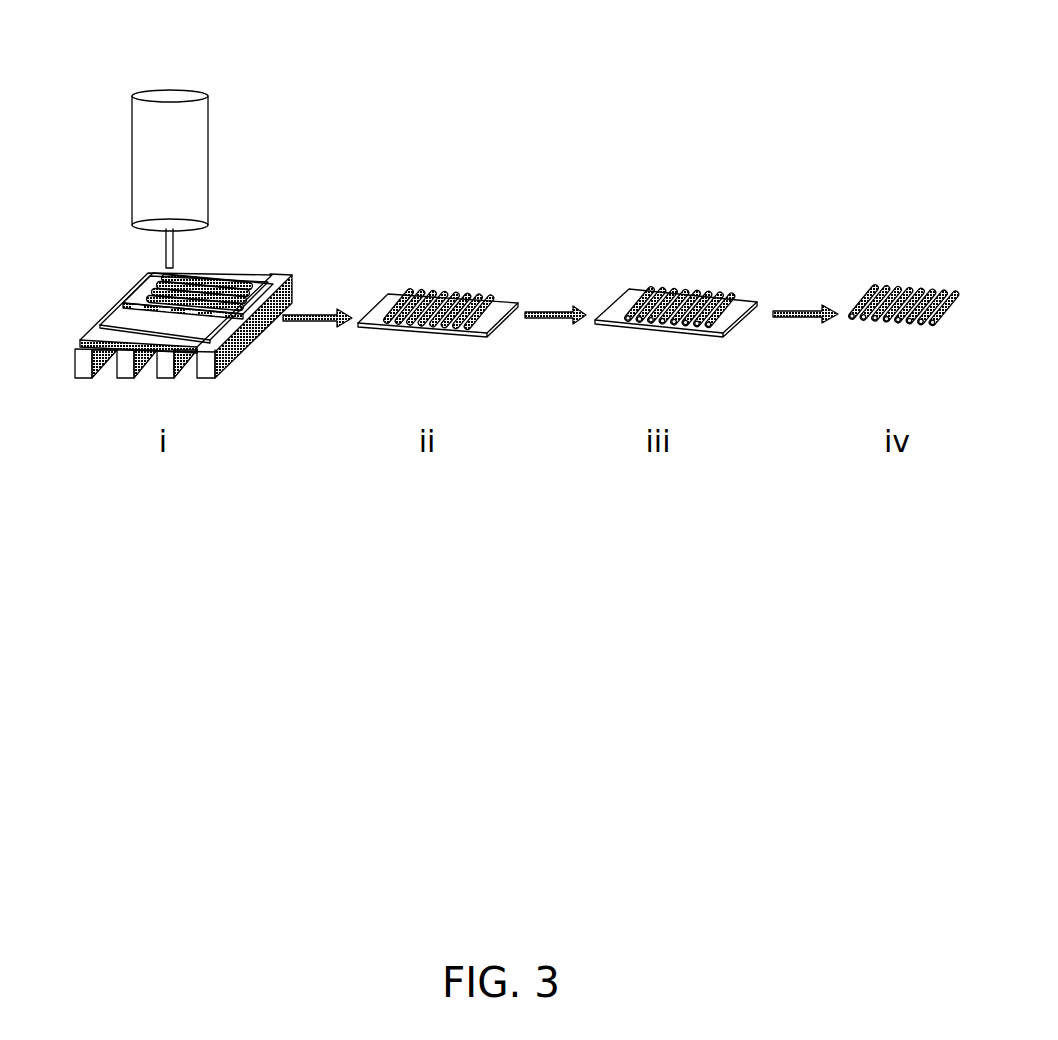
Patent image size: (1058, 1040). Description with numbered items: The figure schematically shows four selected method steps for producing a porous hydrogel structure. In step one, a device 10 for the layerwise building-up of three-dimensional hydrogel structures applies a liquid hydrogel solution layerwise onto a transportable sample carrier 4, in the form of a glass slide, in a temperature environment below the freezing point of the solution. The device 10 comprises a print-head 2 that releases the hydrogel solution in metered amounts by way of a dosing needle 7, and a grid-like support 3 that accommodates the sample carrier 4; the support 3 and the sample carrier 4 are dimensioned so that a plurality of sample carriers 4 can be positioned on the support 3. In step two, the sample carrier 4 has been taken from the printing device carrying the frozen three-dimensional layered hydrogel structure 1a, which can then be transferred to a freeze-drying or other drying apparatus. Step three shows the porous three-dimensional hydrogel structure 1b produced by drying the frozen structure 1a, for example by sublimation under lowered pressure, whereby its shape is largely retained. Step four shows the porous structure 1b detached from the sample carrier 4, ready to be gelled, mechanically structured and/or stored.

The device for the layerwise building-up of three-dimensional hydrogel structures 10 is at (88, 140).
The print-head 2 is at (188, 142).
The dosing needle 7 is at (168, 250).
The frozen 3D layered hydrogel structure 1a is at (212, 285).
The porous 3D hydrogel structure 1b is at (667, 297).
The sample carrier 4 is at (140, 295).
The grid-like support 3 is at (227, 353).